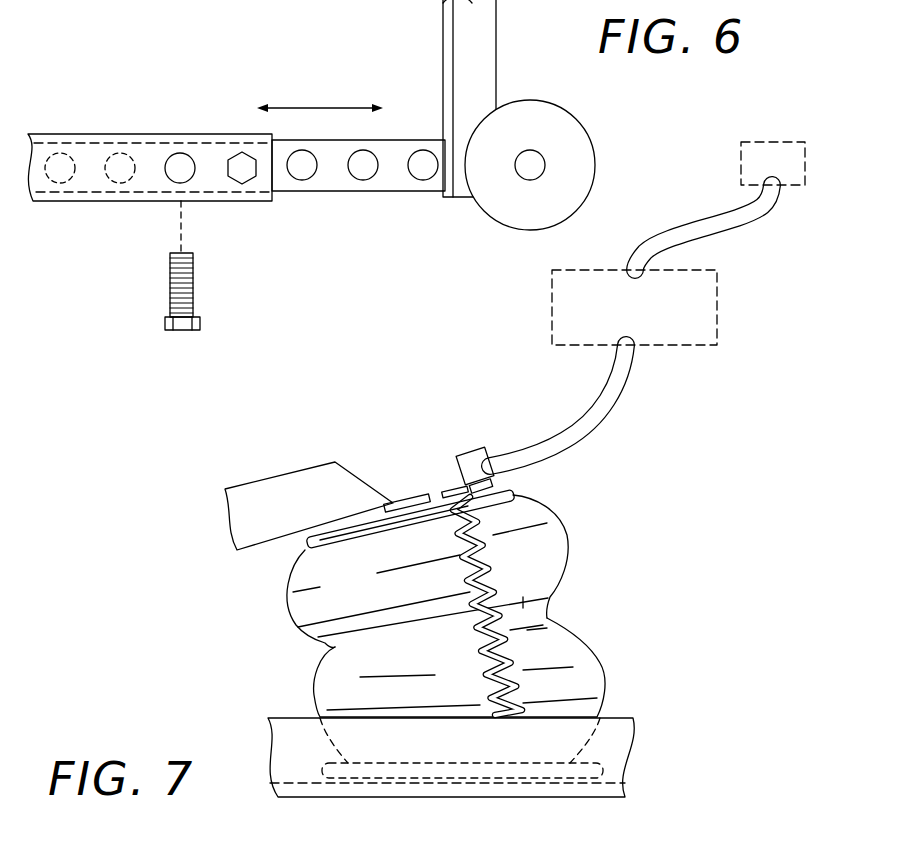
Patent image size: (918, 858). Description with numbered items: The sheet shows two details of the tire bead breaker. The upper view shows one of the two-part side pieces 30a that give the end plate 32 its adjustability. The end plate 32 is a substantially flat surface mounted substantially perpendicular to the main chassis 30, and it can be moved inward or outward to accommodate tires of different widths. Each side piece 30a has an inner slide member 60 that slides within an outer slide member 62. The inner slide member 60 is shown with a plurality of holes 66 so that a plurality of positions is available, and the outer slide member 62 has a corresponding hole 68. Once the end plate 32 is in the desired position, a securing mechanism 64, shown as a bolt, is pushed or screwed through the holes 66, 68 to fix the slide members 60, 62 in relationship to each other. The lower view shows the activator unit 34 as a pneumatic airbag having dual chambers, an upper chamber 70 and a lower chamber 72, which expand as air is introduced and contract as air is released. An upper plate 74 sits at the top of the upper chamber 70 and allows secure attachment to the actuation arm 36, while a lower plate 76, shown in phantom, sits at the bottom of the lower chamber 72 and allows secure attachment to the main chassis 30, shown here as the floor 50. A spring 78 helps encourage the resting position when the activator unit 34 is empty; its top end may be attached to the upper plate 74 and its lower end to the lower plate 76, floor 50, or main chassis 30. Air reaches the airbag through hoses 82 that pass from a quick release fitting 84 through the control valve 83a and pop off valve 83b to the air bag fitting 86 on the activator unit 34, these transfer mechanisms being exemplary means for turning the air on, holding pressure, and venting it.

In FIG. 6, the side piece 30a is at (150, 168).
In FIG. 6, the outer slide member 62 is at (202, 201).
In FIG. 6, the hole 68 is at (180, 153).
In FIG. 6, the holes 66 is at (120, 176).
In FIG. 6, the securing mechanism 64 is at (244, 178).
In FIG. 6, the inner slide member 60 is at (330, 193).
In FIG. 6, the end plate 32 is at (443, 40).
In FIG. 6, the hose 82 is at (722, 232).
In FIG. 6, the quick release fitting 84 is at (787, 181).
In FIG. 6, the control valve 83a is at (634, 307).
In FIG. 6, the pop off valve 83b is at (562, 341).
In FIG. 7, the actuation arm 36 is at (285, 485).
In FIG. 7, the activator unit 34 is at (546, 581).
In FIG. 7, the upper chamber 70 is at (563, 531).
In FIG. 7, the lower chamber 72 is at (608, 687).
In FIG. 7, the spring 78 is at (553, 617).
In FIG. 7, the upper plate 74 is at (516, 491).
In FIG. 7, the air bag fitting 86 is at (467, 450).
In FIG. 7, the main chassis 30 is at (477, 752).
In FIG. 7, the lower plate 76 is at (603, 770).
In FIG. 7, the floor 50 is at (590, 790).